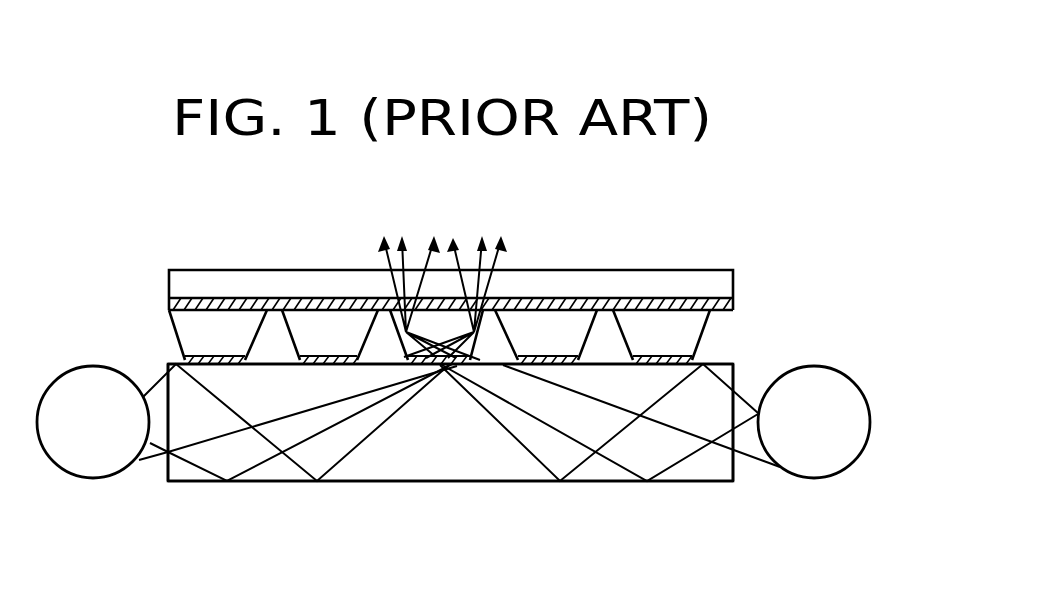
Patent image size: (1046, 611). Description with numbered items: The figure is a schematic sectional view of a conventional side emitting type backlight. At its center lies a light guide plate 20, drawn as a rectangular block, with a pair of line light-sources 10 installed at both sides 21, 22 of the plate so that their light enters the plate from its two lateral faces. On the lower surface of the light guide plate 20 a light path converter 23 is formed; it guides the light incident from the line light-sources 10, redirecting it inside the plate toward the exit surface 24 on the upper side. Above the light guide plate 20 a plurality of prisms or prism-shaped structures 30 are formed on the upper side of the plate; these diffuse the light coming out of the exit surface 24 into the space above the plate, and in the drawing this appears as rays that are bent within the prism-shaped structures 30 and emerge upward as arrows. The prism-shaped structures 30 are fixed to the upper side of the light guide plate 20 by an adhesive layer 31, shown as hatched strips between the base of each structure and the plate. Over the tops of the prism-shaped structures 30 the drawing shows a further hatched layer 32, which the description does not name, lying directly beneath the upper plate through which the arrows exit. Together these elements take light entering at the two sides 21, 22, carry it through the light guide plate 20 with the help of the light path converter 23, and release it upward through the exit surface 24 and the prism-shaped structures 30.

The line light-sources 10 is at (93, 472).
The light guide plate 20 is at (388, 470).
The side of light guide plate 21 is at (157, 470).
The side of light guide plate 22 is at (733, 470).
The light path converter 23 is at (517, 481).
The exit surface 24 is at (288, 360).
The prism-shaped structures 30 is at (694, 328).
The adhesive layer 31 is at (697, 359).
The light transmission plate 32 is at (735, 302).